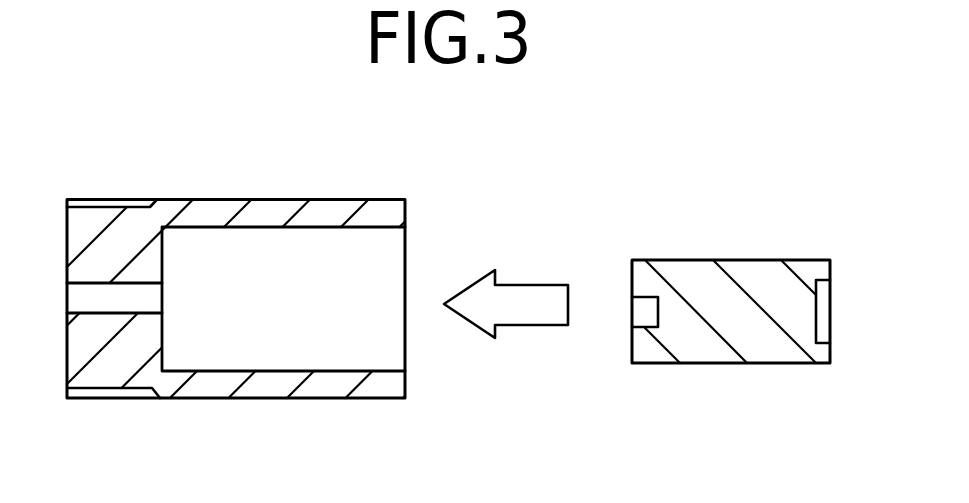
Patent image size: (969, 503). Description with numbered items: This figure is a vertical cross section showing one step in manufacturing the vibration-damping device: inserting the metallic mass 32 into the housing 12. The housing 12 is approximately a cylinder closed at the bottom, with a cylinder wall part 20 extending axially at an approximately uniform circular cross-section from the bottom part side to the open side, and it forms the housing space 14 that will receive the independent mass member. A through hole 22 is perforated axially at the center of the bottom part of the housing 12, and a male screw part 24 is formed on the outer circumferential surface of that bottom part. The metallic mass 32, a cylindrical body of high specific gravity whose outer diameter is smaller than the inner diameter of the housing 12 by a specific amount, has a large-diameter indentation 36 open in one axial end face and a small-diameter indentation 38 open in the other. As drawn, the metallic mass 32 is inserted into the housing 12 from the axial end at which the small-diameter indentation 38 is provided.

The housing 12 is at (236, 276).
The housing space 14 is at (298, 327).
The cylinder wall part 20 is at (287, 205).
The through hole 22 is at (137, 313).
The male screw part 24 is at (113, 203).
The metallic mass 32 is at (718, 290).
The large-diameter indentation 36 is at (815, 320).
The small-diameter indentation 38 is at (645, 326).